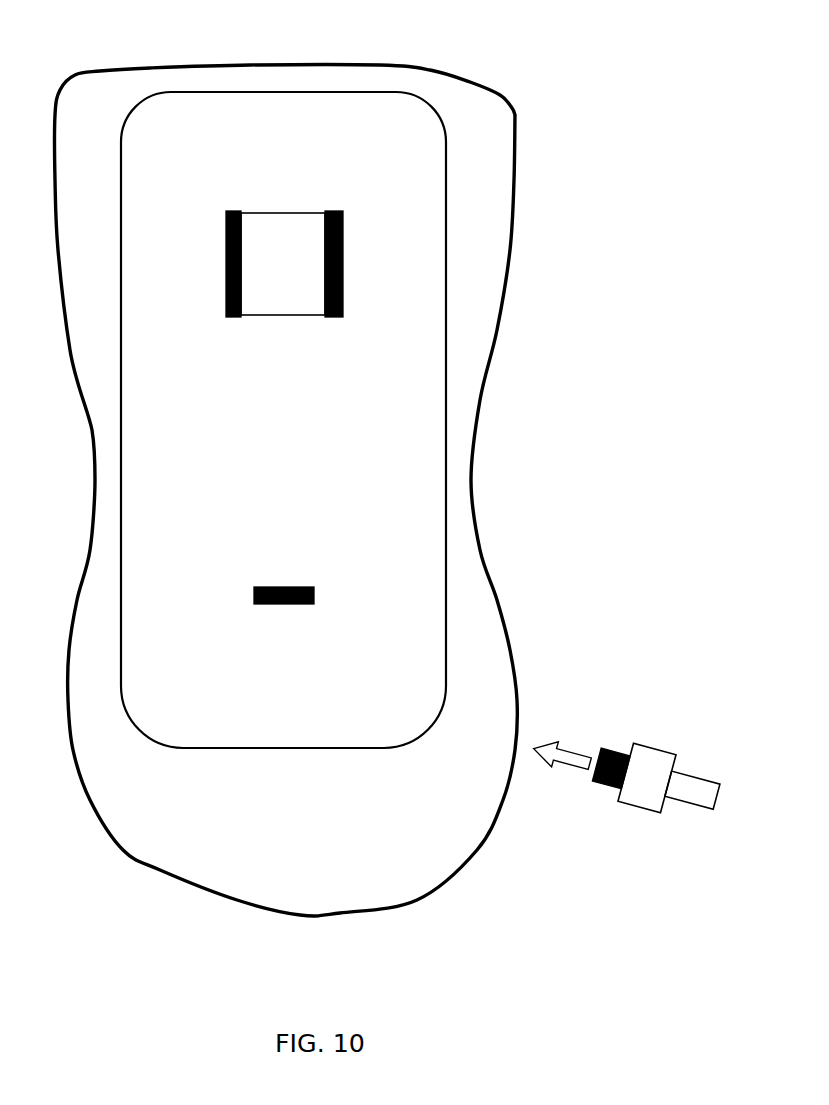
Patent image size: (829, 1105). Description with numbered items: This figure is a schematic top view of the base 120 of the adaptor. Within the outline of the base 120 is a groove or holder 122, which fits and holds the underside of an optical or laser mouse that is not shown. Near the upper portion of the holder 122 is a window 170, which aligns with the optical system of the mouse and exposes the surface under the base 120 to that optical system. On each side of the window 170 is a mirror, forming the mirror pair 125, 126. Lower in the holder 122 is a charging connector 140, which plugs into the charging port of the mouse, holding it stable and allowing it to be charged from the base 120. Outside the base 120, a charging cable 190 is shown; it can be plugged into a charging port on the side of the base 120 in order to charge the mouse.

The base 120 is at (525, 108).
The holder 122 is at (461, 311).
The window 170 is at (279, 232).
The mirror 125 is at (238, 329).
The mirror 126 is at (341, 330).
The charging connector 140 is at (321, 615).
The charging cable 190 is at (653, 737).